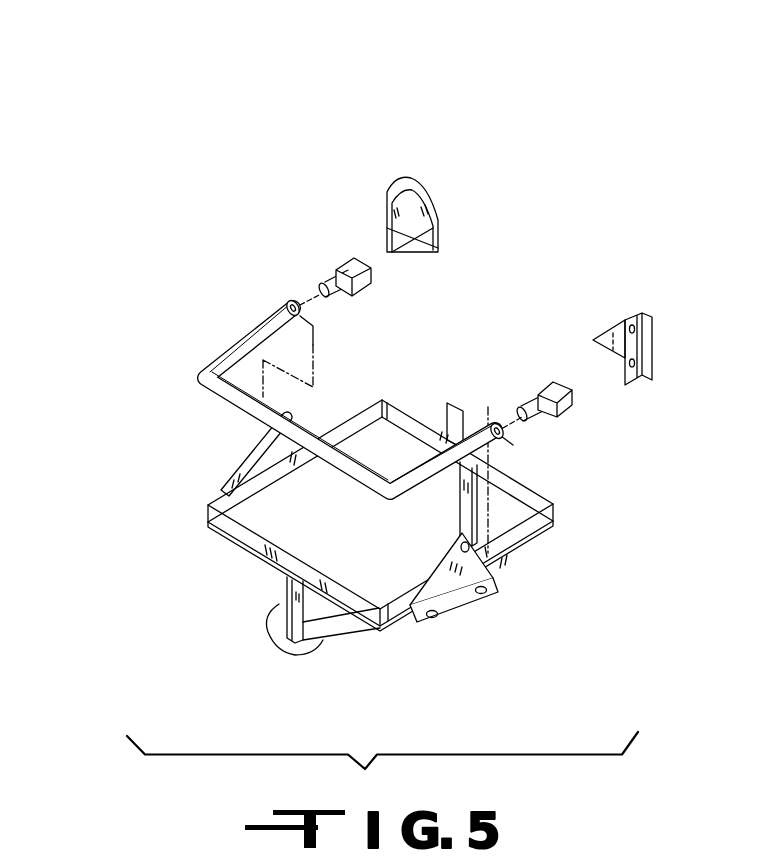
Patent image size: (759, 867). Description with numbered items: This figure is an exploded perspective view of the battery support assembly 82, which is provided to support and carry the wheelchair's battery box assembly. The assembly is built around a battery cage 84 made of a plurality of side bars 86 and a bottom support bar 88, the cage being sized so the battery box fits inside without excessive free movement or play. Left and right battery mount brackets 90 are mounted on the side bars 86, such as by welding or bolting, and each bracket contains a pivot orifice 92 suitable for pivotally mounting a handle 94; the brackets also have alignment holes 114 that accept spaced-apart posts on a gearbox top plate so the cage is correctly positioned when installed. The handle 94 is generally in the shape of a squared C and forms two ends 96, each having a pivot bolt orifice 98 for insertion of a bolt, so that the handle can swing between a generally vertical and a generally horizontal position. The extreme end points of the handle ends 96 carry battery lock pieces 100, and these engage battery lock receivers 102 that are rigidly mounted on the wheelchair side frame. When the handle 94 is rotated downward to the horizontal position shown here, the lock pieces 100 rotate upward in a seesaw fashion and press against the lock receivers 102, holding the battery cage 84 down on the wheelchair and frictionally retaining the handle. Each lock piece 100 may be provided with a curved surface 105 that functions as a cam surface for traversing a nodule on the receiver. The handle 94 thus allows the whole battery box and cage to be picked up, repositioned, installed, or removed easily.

The battery support assembly 82 is at (560, 202).
The battery cage 84 is at (233, 551).
The side bars 86 is at (422, 406).
The bottom support bar 88 is at (270, 622).
The battery mount brackets 90 is at (263, 443).
The pivot orifice 92 is at (483, 573).
The handle 94 is at (192, 370).
The handle ends 96 is at (248, 322).
The pivot bolt orifice 98 is at (290, 305).
The battery lock pieces 100 is at (370, 287).
The battery lock receivers 102 is at (438, 190).
The curved surface 105 is at (353, 258).
The alignment holes 114 is at (483, 597).